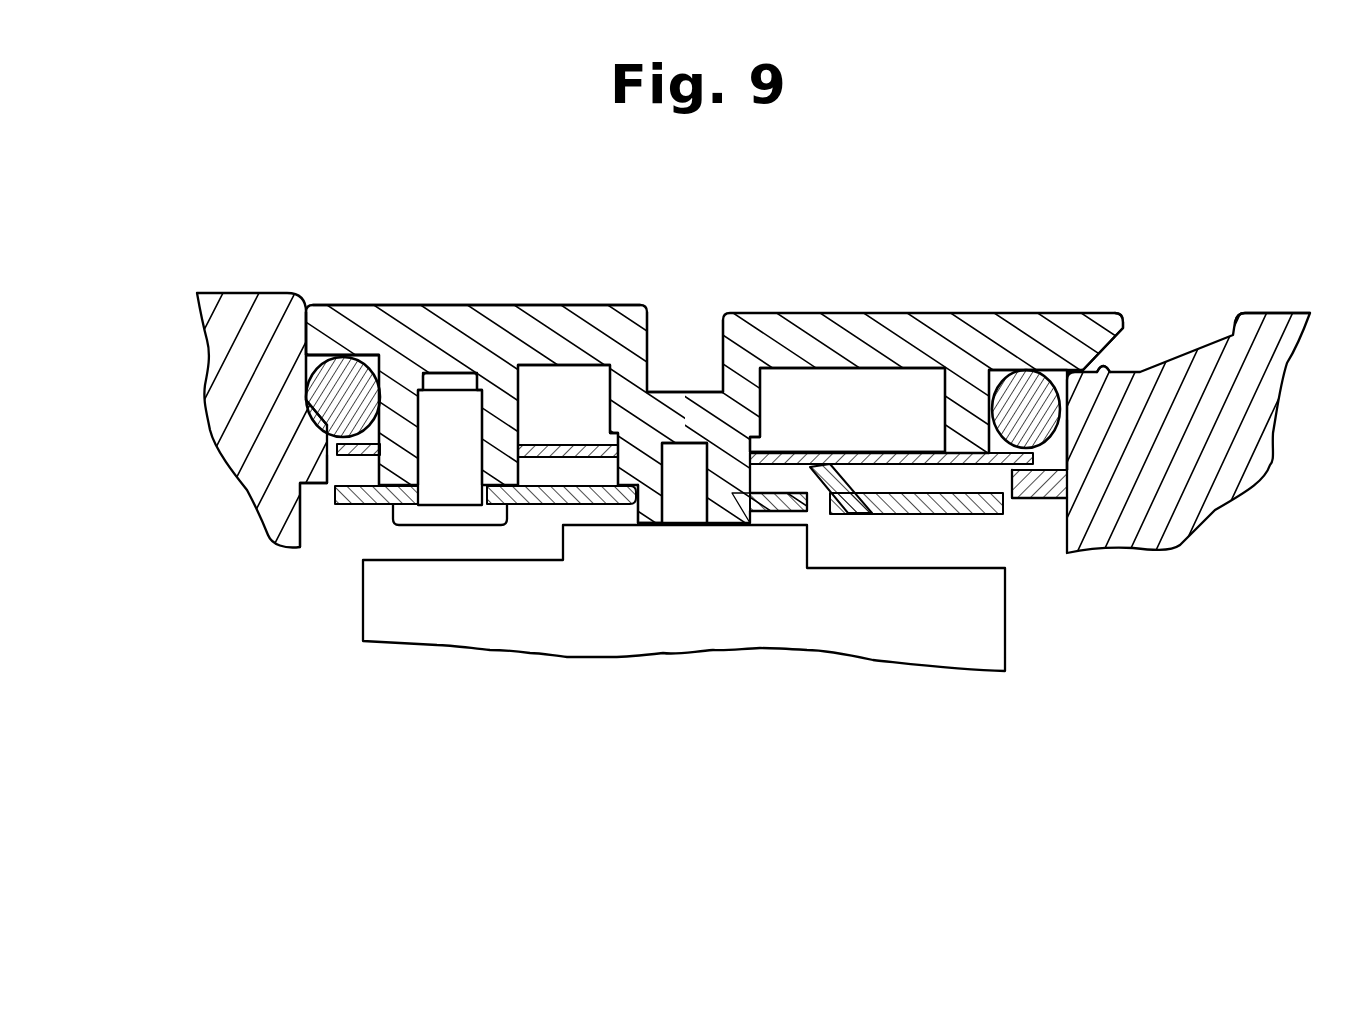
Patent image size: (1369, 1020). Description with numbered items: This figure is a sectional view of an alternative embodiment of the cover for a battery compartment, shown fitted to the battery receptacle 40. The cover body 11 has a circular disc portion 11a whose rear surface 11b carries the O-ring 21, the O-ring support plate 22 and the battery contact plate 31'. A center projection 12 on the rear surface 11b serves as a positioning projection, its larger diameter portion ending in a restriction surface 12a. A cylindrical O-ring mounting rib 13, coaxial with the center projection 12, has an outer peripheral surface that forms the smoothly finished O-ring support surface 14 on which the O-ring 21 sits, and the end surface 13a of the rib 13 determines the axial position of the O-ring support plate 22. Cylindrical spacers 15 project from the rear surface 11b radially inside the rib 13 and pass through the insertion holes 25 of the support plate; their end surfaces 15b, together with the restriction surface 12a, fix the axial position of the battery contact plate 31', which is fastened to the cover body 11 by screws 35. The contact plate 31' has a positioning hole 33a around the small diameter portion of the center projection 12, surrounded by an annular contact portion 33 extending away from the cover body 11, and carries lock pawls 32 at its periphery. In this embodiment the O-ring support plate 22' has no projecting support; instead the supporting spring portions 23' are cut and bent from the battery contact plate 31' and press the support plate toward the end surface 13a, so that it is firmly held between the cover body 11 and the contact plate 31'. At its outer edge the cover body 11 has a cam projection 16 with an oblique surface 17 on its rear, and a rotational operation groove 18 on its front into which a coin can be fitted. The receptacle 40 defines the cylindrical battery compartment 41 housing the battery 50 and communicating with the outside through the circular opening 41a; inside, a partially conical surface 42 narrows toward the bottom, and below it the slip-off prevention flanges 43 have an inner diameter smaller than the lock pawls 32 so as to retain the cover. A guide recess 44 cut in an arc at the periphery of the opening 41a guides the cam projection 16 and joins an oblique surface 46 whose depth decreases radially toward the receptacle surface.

The cover body 11 is at (849, 308).
The circular disc portion 11a is at (567, 330).
The rear surface 11b is at (350, 355).
The center projection 12 is at (740, 417).
The restriction surface 12a is at (740, 515).
The O-ring mounting rib 13 is at (963, 465).
The end surface 13a is at (1012, 473).
The O-ring support surface 14 is at (381, 357).
The cylindrical spacers 15 is at (393, 510).
The end surfaces 15b is at (505, 516).
The cam projection 16 is at (1090, 328).
The oblique surface 17 is at (1124, 355).
The rotational operation groove 18 is at (719, 337).
The O-ring 21 is at (356, 372).
The O-ring support plate 22 is at (543, 580).
The O-ring support plate 22' is at (912, 593).
The supporting spring portions 23' is at (906, 510).
The insertion holes 25 is at (517, 450).
The battery contact plate 31' is at (590, 601).
The lock pawls 32 is at (318, 516).
The annular contact portion 33 is at (737, 525).
The positioning hole 33a is at (648, 523).
The screws 35 is at (433, 520).
The battery receptacle 40 is at (227, 347).
The battery compartment 41 is at (302, 553).
The circular opening 41a is at (312, 305).
The partially conical surface 42 is at (322, 417).
The slip-off prevention flanges 43 is at (1066, 498).
The guide recess 44 is at (1104, 370).
The oblique surface 46 is at (1282, 362).
The cylindrical battery 50 is at (990, 637).